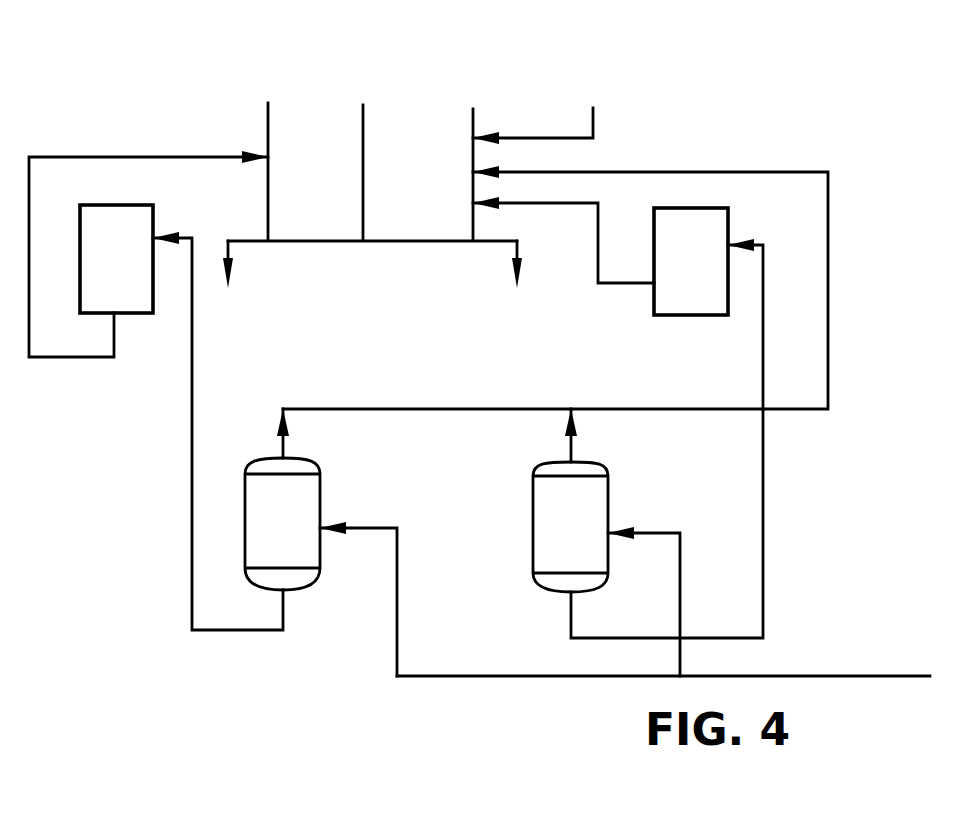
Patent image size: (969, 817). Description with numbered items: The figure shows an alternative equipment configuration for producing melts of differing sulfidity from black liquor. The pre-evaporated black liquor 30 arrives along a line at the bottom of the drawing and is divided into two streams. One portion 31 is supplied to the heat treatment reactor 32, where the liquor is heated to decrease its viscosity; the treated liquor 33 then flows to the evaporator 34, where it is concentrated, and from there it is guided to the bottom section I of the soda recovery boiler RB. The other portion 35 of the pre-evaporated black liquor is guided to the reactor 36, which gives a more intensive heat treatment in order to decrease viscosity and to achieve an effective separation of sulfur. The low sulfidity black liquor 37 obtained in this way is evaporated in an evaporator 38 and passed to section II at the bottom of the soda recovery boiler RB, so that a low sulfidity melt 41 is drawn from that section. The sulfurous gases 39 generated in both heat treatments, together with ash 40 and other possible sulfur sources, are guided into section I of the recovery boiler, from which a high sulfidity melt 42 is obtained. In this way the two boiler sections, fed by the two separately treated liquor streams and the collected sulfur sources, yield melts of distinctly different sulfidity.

The soda recovery boiler RB is at (460, 82).
The pre-evaporated black liquor 30 is at (804, 676).
The portion of pre-evaporated black liquor 31 is at (680, 590).
The heat treatment reactor 32 is at (608, 497).
The liquor 33 is at (762, 470).
The evaporator 34 is at (728, 218).
The other portion of pre-evaporated black liquor 35 is at (452, 674).
The reactor 36 is at (320, 505).
The low sulfidity black liquor 37 is at (192, 525).
The evaporator 38 is at (153, 216).
The sulfurous gases 39 is at (815, 409).
The ash 40 is at (593, 120).
The low sulfidity melt 41 is at (258, 241).
The high sulfidity melt 42 is at (517, 243).